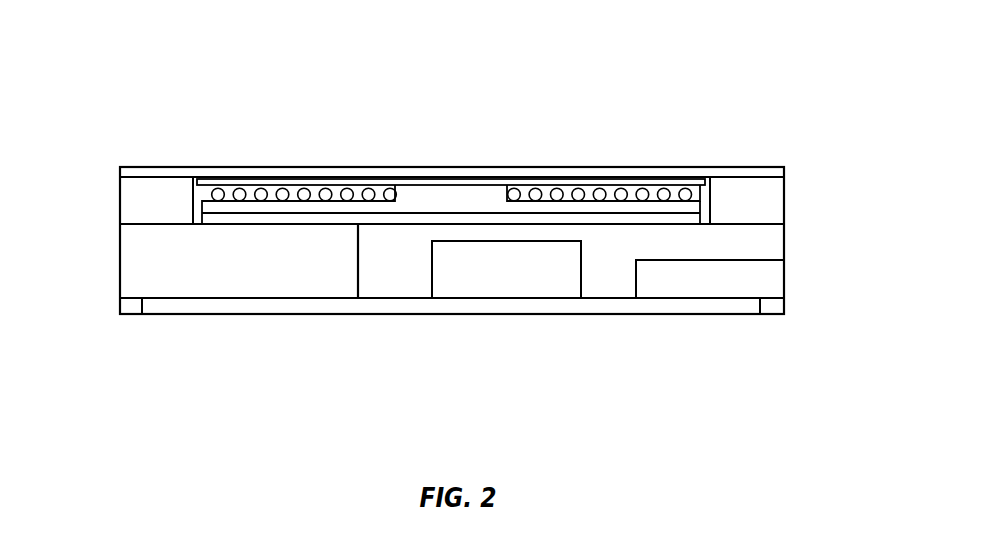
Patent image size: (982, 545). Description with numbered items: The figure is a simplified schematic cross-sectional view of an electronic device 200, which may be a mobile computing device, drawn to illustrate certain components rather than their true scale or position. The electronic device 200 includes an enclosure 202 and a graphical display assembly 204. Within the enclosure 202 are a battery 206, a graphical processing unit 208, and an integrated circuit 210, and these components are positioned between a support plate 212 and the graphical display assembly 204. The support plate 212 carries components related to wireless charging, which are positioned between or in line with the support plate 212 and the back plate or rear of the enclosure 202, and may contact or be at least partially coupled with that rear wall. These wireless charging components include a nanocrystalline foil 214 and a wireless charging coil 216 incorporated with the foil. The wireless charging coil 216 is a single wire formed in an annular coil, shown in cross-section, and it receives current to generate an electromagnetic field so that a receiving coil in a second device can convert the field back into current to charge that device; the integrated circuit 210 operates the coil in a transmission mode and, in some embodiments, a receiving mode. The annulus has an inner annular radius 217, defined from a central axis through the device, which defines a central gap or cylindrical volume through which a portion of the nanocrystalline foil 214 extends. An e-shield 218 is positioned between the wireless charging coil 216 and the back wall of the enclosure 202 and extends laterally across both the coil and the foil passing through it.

The electronic device 200 is at (450, 224).
The enclosure 202 is at (785, 243).
The graphical display assembly 204 is at (182, 318).
The battery 206 is at (118, 258).
The graphical processing unit 208 is at (432, 283).
The integrated circuit 210 is at (636, 283).
The support plate 212 is at (118, 198).
The nanocrystalline foil 214 is at (702, 199).
The wireless charging coil 216 is at (624, 186).
The inner annular radius 217 is at (397, 189).
The e-shield 218 is at (266, 178).